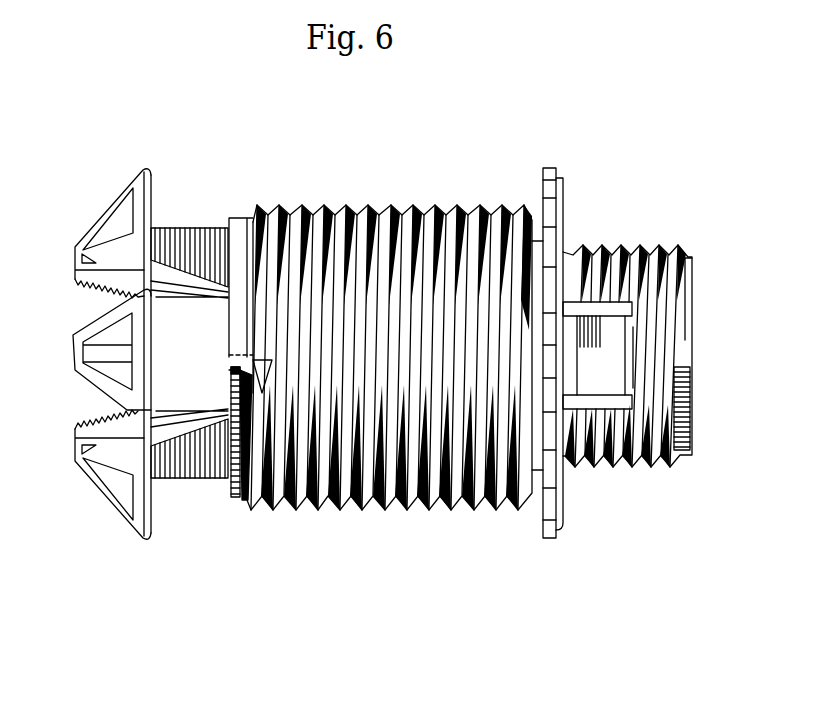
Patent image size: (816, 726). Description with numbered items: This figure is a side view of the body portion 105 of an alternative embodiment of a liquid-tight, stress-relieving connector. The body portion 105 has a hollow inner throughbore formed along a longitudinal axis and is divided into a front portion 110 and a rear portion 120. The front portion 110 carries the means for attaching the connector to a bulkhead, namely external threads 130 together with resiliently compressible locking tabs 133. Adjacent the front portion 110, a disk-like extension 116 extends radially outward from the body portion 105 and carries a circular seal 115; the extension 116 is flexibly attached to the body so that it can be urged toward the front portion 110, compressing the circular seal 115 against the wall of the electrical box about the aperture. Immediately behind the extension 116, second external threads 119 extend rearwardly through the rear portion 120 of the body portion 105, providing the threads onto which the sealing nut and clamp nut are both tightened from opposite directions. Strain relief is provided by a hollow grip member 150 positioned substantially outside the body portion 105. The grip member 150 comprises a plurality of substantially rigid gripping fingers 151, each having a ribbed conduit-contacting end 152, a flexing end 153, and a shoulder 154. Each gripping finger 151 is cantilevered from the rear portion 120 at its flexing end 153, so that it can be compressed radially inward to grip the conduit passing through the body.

The body portion 105 is at (692, 627).
The front portion 110 is at (692, 562).
The circular seal 115 is at (559, 190).
The disk-like extension 116 is at (548, 167).
The second external threads 119 is at (368, 207).
The rear portion 120 is at (382, 535).
The external threads 130 is at (641, 247).
The locking tabs 133 is at (611, 353).
The grip member 150 is at (174, 529).
The gripping fingers 151 is at (120, 197).
The ribbed conduit-contacting end 152 is at (97, 281).
The flexing end 153 is at (231, 210).
The shoulder 154 is at (151, 200).